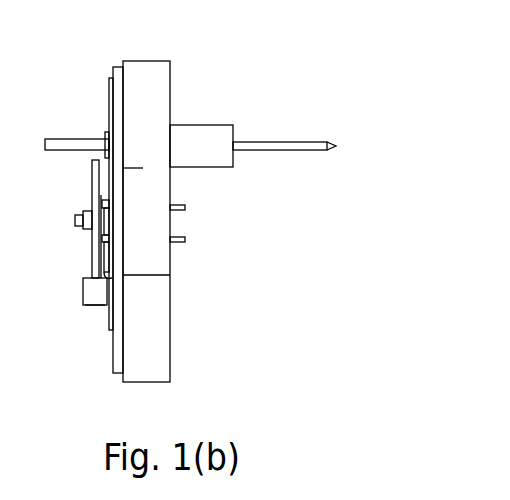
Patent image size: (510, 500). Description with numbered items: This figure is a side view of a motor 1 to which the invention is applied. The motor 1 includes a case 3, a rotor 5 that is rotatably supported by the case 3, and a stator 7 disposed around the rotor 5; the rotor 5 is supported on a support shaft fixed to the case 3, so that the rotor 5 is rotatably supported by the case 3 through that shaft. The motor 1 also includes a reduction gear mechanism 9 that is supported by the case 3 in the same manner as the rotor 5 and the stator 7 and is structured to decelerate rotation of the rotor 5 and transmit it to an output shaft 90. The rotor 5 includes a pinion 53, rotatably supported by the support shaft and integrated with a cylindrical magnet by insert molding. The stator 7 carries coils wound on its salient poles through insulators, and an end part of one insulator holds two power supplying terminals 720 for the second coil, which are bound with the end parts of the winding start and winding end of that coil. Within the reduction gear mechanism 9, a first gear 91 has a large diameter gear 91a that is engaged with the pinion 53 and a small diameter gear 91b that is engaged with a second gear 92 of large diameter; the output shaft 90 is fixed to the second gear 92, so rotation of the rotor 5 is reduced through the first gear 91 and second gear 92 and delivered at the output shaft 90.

The motor 1 is at (200, 63).
The case 3 is at (157, 370).
The rotor 5 is at (82, 290).
The stator 7 is at (102, 332).
The reduction gear mechanism 9 is at (72, 180).
The pinion 53 is at (96, 307).
The output shaft 90 is at (274, 146).
The first gear 91 is at (92, 193).
The large diameter gear 91a is at (92, 255).
The small diameter gear 91b is at (113, 203).
The second gear 92 is at (108, 107).
The power supplying terminals 720 is at (186, 240).